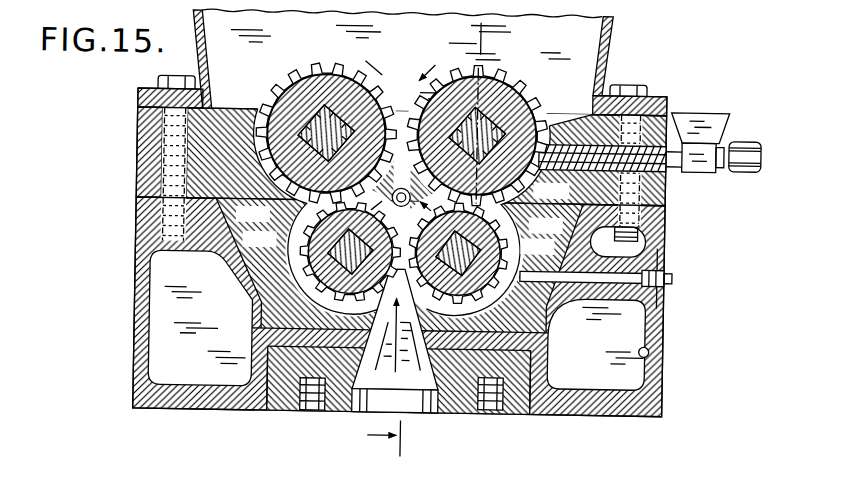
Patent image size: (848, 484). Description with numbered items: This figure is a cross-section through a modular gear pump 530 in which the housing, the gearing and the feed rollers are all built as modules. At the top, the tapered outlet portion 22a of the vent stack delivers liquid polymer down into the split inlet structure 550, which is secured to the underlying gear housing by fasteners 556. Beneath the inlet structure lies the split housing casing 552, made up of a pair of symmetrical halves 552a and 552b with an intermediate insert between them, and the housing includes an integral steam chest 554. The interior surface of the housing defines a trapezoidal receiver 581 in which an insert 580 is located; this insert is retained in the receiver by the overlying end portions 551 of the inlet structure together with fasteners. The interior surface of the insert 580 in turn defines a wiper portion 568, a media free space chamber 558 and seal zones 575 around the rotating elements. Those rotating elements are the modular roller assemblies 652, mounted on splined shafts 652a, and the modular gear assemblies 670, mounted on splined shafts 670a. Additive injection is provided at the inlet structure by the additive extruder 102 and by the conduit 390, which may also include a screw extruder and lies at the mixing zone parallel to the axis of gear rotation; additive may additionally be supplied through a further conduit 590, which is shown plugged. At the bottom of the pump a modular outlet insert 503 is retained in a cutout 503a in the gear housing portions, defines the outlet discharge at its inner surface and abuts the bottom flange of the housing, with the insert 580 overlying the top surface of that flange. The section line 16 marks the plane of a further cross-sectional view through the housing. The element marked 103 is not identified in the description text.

The section line 16- 16 is at (440, 239).
The tapered outlet portion 22a is at (612, 25).
The additive extruder 102 is at (739, 104).
The discharge nozzle 103 is at (396, 341).
The additive port 390 is at (393, 188).
The modular outlet insert 503 is at (522, 404).
The cutout 503a is at (288, 407).
The pump 530 is at (127, 227).
The split inlet structure 550 is at (662, 101).
The end portions of inlet structure 551 is at (402, 219).
The split housing casing 552 is at (671, 226).
The housing half 552a is at (433, 354).
The housing half 552b is at (655, 250).
The integral steam chest 554 is at (654, 343).
The fasteners 556 is at (158, 81).
The media free space chamber 558 is at (547, 296).
The wiper portion 568 is at (406, 214).
The seal zones 575 is at (372, 268).
The insert 580 is at (544, 321).
The trapezoidal receiver 581 is at (566, 236).
The conduit 590 is at (616, 276).
The roller assemblies 652 is at (312, 56).
The splined shaft 652a is at (333, 140).
The gear assemblies 670 is at (277, 259).
The splined shaft 670a is at (288, 270).